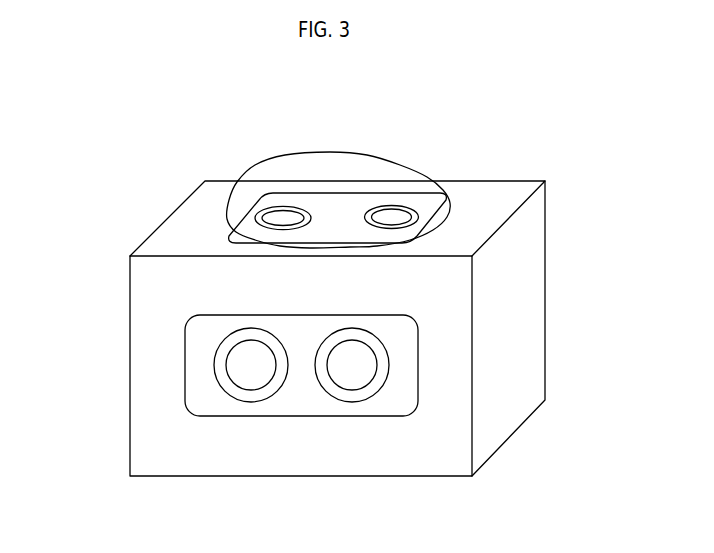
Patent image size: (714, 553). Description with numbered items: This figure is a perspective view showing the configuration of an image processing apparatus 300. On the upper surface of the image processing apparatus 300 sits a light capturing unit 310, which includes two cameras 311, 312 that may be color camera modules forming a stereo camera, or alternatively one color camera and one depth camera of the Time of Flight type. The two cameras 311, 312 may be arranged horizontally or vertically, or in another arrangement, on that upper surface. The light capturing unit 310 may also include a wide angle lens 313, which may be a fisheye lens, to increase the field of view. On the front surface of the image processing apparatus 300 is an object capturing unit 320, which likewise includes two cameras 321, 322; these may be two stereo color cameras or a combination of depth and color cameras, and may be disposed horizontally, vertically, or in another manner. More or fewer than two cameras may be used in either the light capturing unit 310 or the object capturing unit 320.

The image processing apparatus 300 is at (545, 182).
The light capturing unit 310 is at (247, 211).
The camera 311 is at (283, 218).
The camera 312 is at (391, 217).
The wide angle lens 313 is at (337, 151).
The object capturing unit 320 is at (185, 367).
The camera 321 is at (250, 367).
The camera 322 is at (351, 367).